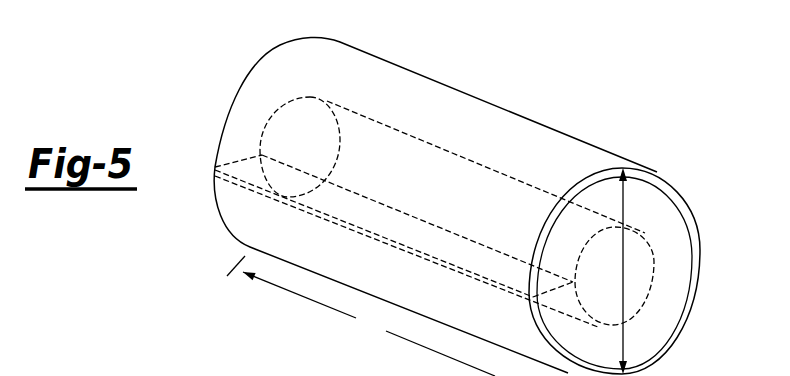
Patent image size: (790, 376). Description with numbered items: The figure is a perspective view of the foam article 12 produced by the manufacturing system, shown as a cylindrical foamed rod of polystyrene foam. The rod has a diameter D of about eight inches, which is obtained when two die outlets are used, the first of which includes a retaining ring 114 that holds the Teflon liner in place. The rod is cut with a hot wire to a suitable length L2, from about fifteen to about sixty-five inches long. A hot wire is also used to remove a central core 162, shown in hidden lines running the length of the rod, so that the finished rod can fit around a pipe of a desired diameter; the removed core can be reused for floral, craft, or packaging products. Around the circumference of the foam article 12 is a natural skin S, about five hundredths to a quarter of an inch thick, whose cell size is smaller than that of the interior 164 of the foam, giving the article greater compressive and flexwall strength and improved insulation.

The foam article 12 is at (604, 133).
The retaining ring 114 is at (178, 374).
The central core 162 is at (686, 198).
The interior 164 is at (640, 196).
The diameter D is at (623, 290).
The natural skin S is at (688, 306).
The length L2 is at (361, 316).